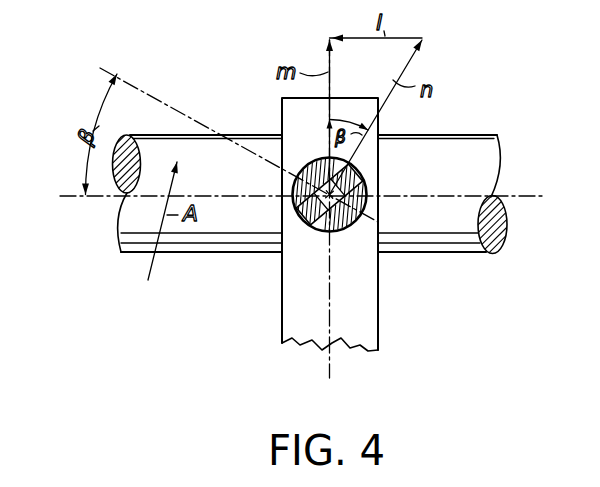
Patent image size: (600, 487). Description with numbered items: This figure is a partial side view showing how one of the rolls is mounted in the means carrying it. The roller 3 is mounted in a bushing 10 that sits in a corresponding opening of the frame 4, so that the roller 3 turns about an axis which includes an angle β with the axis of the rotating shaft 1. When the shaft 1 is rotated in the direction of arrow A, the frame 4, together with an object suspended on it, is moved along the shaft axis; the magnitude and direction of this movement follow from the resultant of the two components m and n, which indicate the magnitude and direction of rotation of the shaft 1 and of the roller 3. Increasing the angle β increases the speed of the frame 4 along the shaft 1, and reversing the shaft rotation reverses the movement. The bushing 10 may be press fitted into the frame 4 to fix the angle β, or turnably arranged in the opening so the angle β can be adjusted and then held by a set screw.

The rotating shaft 1 is at (450, 223).
The roller 3 is at (315, 232).
The frame 4 is at (370, 322).
The bushing 10 is at (293, 204).